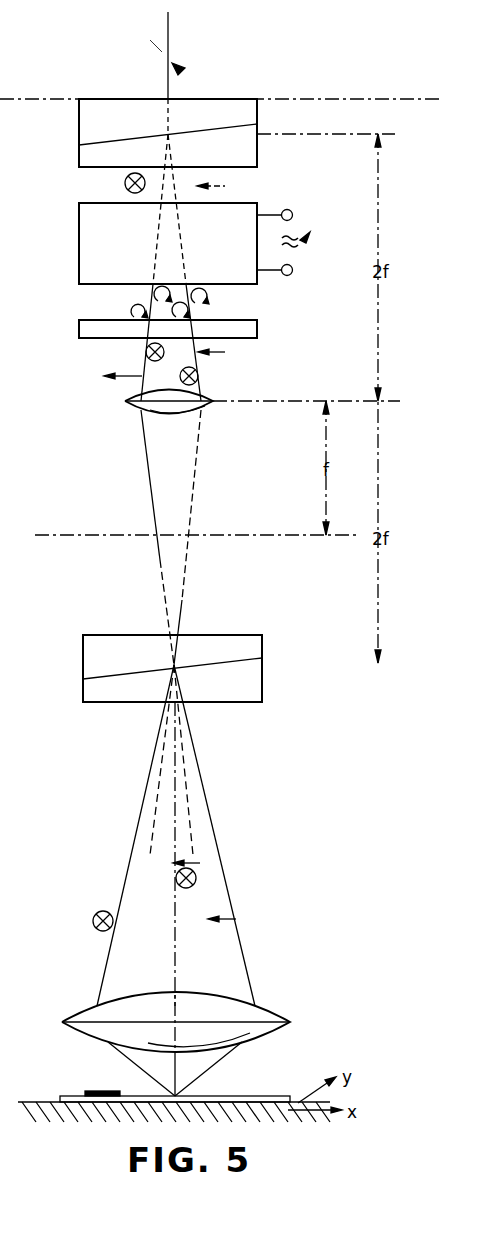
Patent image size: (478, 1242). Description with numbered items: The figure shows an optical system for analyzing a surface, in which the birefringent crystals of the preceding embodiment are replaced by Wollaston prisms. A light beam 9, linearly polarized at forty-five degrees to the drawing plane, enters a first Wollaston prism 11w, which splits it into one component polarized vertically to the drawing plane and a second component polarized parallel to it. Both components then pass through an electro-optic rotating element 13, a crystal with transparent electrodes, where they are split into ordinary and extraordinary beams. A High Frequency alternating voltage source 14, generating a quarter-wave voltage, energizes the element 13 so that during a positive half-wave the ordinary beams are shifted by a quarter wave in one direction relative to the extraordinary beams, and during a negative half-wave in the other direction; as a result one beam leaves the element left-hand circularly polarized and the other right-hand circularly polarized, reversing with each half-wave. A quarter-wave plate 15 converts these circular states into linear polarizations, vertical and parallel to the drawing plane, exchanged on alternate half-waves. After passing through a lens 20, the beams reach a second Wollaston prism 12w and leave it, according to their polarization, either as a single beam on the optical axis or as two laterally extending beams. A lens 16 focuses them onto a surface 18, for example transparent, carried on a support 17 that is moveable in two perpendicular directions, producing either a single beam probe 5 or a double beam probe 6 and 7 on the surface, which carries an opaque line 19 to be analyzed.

The light beam 9 is at (168, 42).
The Wollaston prism 11w is at (88, 127).
The electro-optic rotating element 13 is at (93, 242).
The High Frequency alternating voltage source 14 is at (300, 236).
The quarter-wave plate 15 is at (86, 325).
The lens 20 is at (137, 403).
The second Wollaston prism 12w is at (99, 652).
The lens 16 is at (83, 1012).
The support 17 is at (33, 1103).
The surface 18 is at (262, 1097).
The line 19 is at (93, 1091).
The double beam probe 6 is at (157, 1094).
The single beam probe 5 is at (179, 1094).
The double beam probe 7 is at (200, 1094).